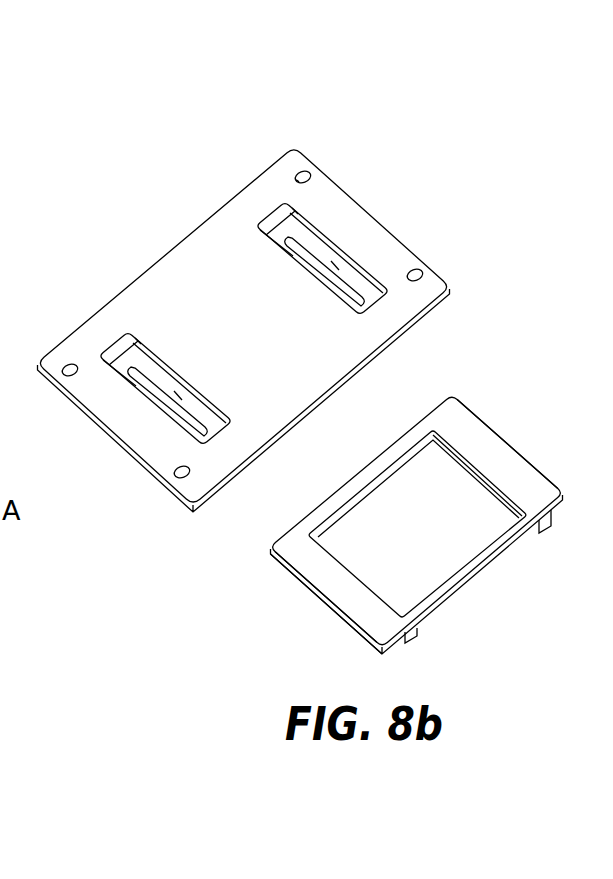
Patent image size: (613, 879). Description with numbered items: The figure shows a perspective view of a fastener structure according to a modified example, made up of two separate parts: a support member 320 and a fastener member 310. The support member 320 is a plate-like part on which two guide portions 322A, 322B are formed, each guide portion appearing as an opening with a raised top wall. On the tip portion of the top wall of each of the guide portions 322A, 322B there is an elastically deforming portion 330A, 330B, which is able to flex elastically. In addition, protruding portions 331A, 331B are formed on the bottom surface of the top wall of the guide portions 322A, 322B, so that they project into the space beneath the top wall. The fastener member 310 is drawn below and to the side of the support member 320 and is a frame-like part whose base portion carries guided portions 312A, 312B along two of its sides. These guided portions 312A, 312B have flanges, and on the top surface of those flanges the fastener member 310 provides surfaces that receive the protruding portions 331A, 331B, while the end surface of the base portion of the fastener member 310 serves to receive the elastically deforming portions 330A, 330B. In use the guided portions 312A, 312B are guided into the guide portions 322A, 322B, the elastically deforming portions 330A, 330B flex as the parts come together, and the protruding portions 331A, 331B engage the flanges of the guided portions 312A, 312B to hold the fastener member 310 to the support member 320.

The fastener member 310 is at (404, 462).
The guided portion 312A is at (331, 614).
The guided portion 312B is at (518, 446).
The support member 320 is at (137, 207).
The guide portion 322A is at (122, 352).
The guide portion 322B is at (283, 219).
The elastically deforming portion 330A is at (156, 360).
The elastically deforming portion 330B is at (293, 222).
The protruding portion 331A is at (166, 408).
The protruding portion 331B is at (337, 265).